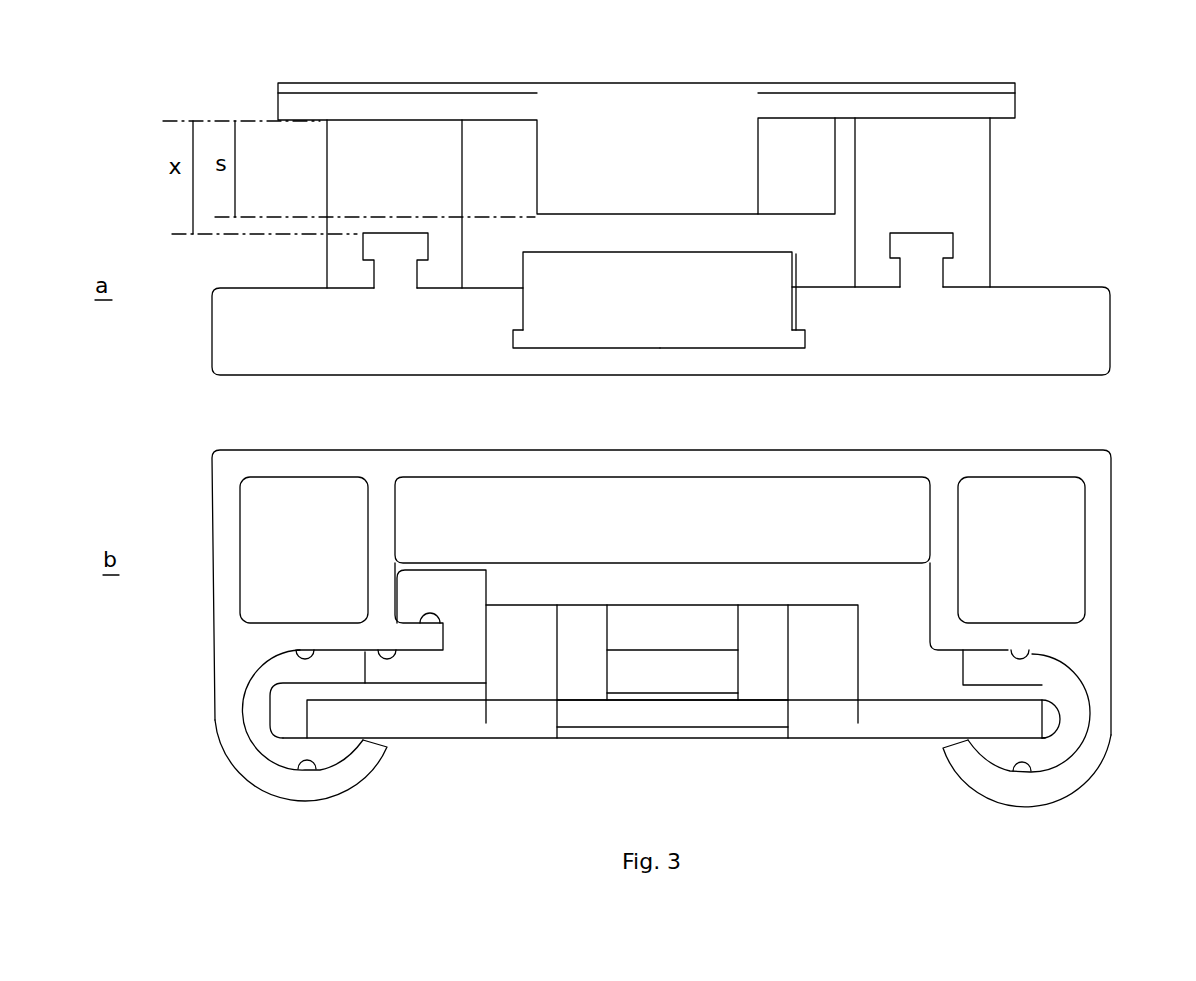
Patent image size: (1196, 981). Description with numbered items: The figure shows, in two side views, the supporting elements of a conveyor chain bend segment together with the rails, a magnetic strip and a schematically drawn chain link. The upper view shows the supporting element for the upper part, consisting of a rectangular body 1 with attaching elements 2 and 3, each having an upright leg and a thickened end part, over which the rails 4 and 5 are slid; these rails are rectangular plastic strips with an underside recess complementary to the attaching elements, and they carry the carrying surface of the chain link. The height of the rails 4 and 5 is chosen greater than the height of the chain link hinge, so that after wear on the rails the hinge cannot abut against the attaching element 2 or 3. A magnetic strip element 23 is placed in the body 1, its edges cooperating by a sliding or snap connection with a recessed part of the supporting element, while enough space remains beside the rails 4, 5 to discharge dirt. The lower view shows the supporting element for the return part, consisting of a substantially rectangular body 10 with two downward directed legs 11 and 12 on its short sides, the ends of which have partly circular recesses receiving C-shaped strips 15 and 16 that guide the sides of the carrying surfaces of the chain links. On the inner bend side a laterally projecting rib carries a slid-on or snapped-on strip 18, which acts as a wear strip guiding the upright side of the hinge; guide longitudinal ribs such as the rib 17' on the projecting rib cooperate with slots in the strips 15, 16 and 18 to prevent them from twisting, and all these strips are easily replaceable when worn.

The rectangular body 1 is at (240, 285).
The attaching element 2 is at (365, 247).
The attaching element 3 is at (955, 243).
The rail 4 is at (340, 164).
The rail 5 is at (970, 178).
The substantially rectangular body 10 is at (650, 450).
The downward directed leg 11 is at (212, 660).
The downward directed leg 12 is at (1113, 658).
The C-shaped strip 15 is at (277, 742).
The C-shaped strip 16 is at (1053, 745).
The guide longitudinal rib 17' is at (442, 724).
The strip 18 is at (467, 592).
The magnetic strip element 23 is at (659, 332).